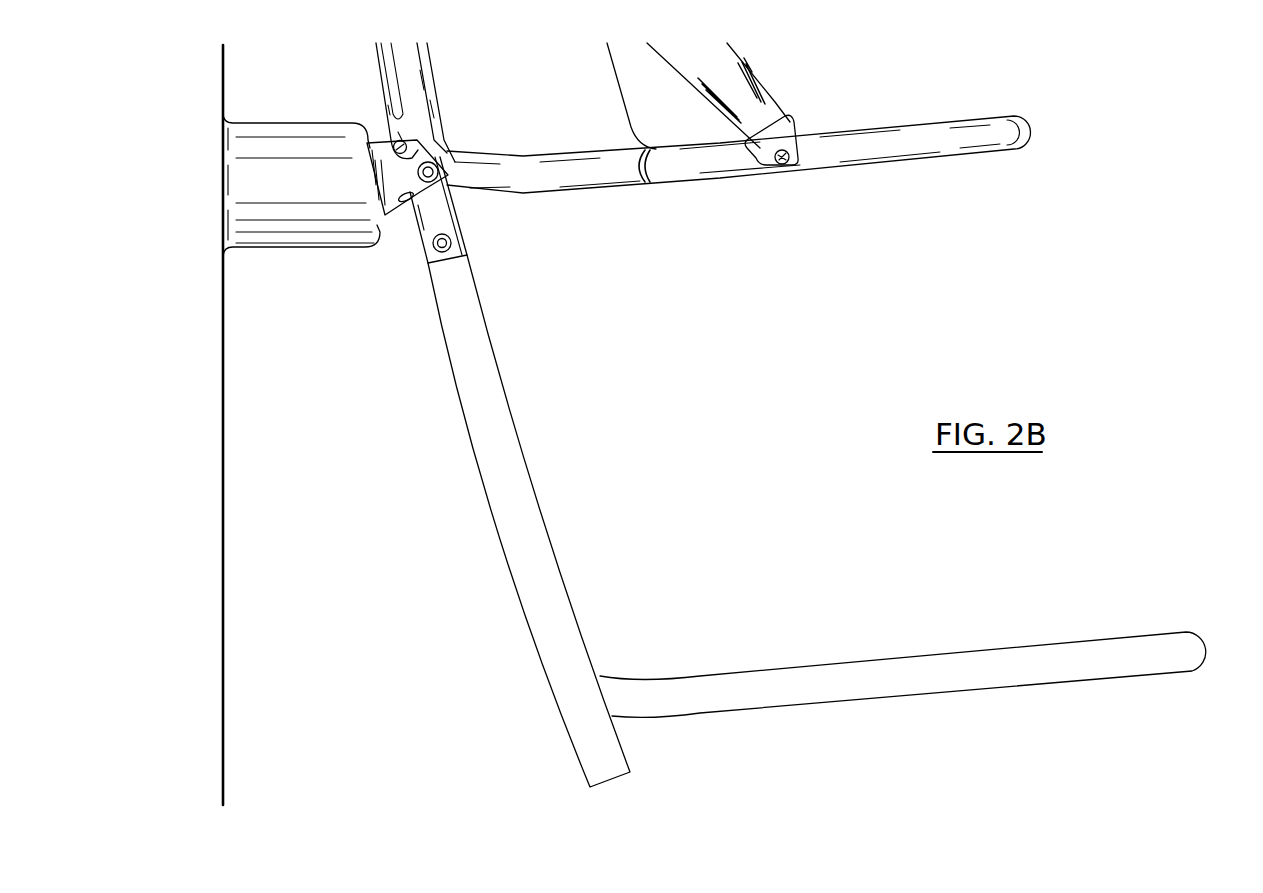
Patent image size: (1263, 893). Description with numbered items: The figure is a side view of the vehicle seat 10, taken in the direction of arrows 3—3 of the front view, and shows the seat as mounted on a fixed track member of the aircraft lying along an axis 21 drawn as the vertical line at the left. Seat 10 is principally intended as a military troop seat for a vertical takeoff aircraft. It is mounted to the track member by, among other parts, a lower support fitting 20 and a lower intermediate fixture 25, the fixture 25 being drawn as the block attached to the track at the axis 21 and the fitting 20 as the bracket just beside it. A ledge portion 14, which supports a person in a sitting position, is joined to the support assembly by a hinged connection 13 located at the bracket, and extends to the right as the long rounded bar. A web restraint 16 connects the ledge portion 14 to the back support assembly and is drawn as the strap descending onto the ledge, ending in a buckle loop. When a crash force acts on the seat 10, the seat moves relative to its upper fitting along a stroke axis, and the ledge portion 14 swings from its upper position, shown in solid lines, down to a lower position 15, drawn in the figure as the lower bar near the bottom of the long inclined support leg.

The vehicle seat 10 is at (943, 260).
The hinged connection 13 is at (417, 186).
The ledge portion 14 is at (955, 128).
The lower position of ledge portion 15 is at (873, 668).
The web restraint 16 is at (735, 52).
The lower support fitting 20 is at (396, 212).
The axis 21 is at (222, 70).
The lower intermediate fixture 25 is at (238, 212).
The arrows 3- 3 is at (485, 102).